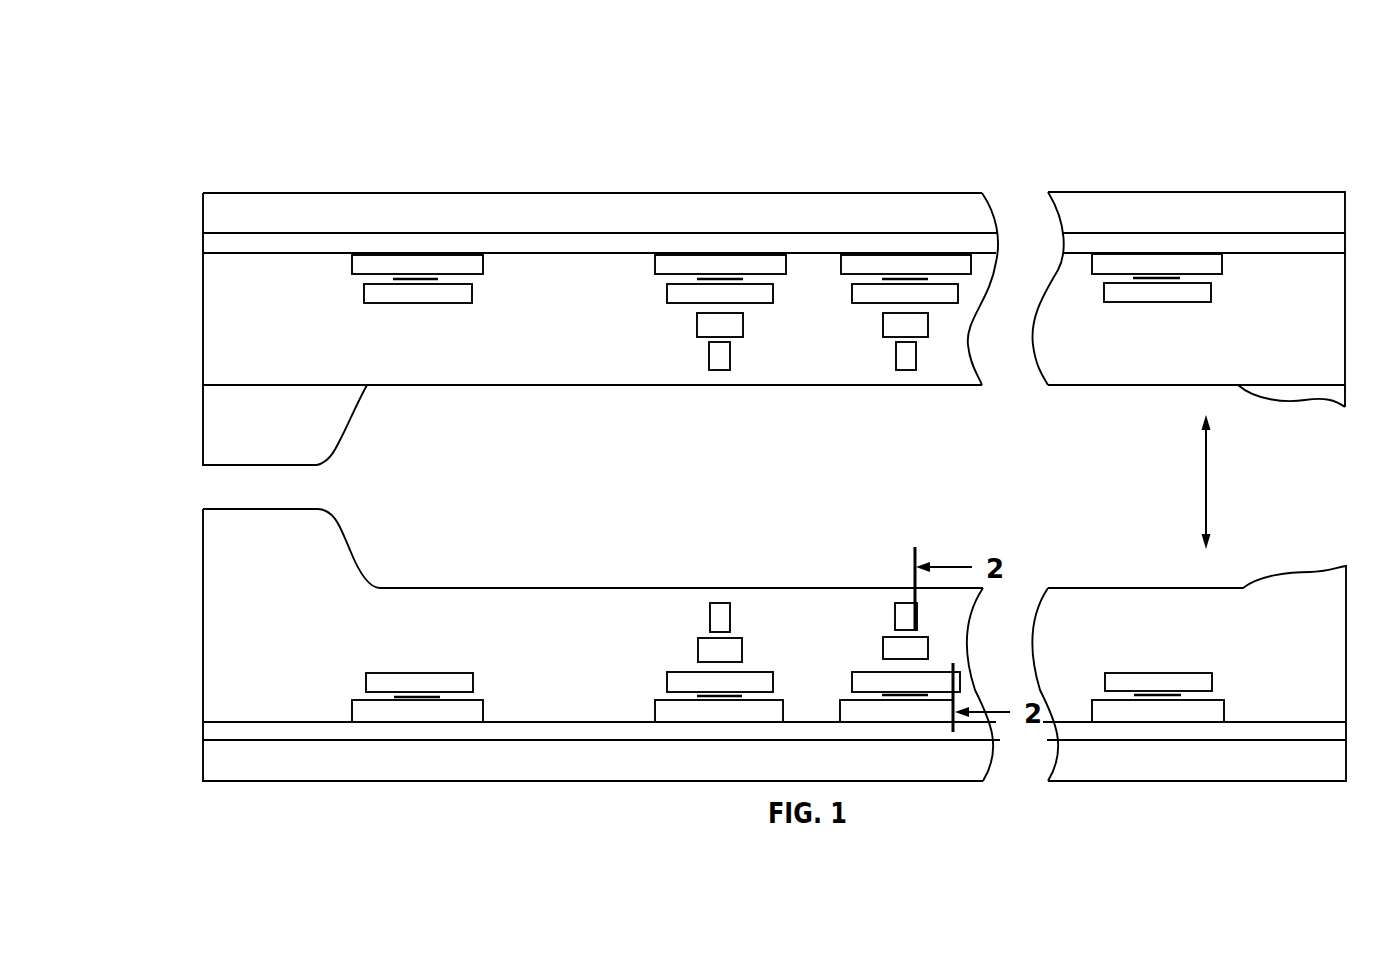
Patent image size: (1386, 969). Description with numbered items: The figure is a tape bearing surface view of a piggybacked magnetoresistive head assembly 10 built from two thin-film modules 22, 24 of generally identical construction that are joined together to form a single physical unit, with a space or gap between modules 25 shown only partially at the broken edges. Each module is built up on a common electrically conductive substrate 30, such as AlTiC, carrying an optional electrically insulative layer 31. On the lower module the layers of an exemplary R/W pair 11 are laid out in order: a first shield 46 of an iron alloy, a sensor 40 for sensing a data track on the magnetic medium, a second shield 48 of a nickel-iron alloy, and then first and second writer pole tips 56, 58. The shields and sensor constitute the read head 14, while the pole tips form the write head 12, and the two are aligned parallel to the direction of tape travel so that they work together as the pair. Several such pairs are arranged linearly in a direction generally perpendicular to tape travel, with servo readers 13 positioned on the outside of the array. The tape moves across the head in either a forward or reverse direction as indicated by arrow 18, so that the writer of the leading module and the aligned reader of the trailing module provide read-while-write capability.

The magnetoresistive head assembly 10 is at (265, 163).
The R/W pair 11 is at (694, 606).
The write head 12 is at (723, 628).
The servo reader 13 is at (478, 657).
The read head 14 is at (694, 677).
The arrow 18 is at (1208, 490).
The thin-film module 22 is at (1237, 192).
The thin-film module 24 is at (1227, 781).
The space or gap between modules 25 is at (342, 433).
The substrate 30 is at (368, 225).
The insulating layer 31 is at (1272, 724).
The sensor 40 is at (650, 689).
The first shield 46 is at (655, 717).
The second shield 48 is at (667, 680).
The first writer pole tip 56 is at (698, 652).
The second writer pole tip 58 is at (710, 625).